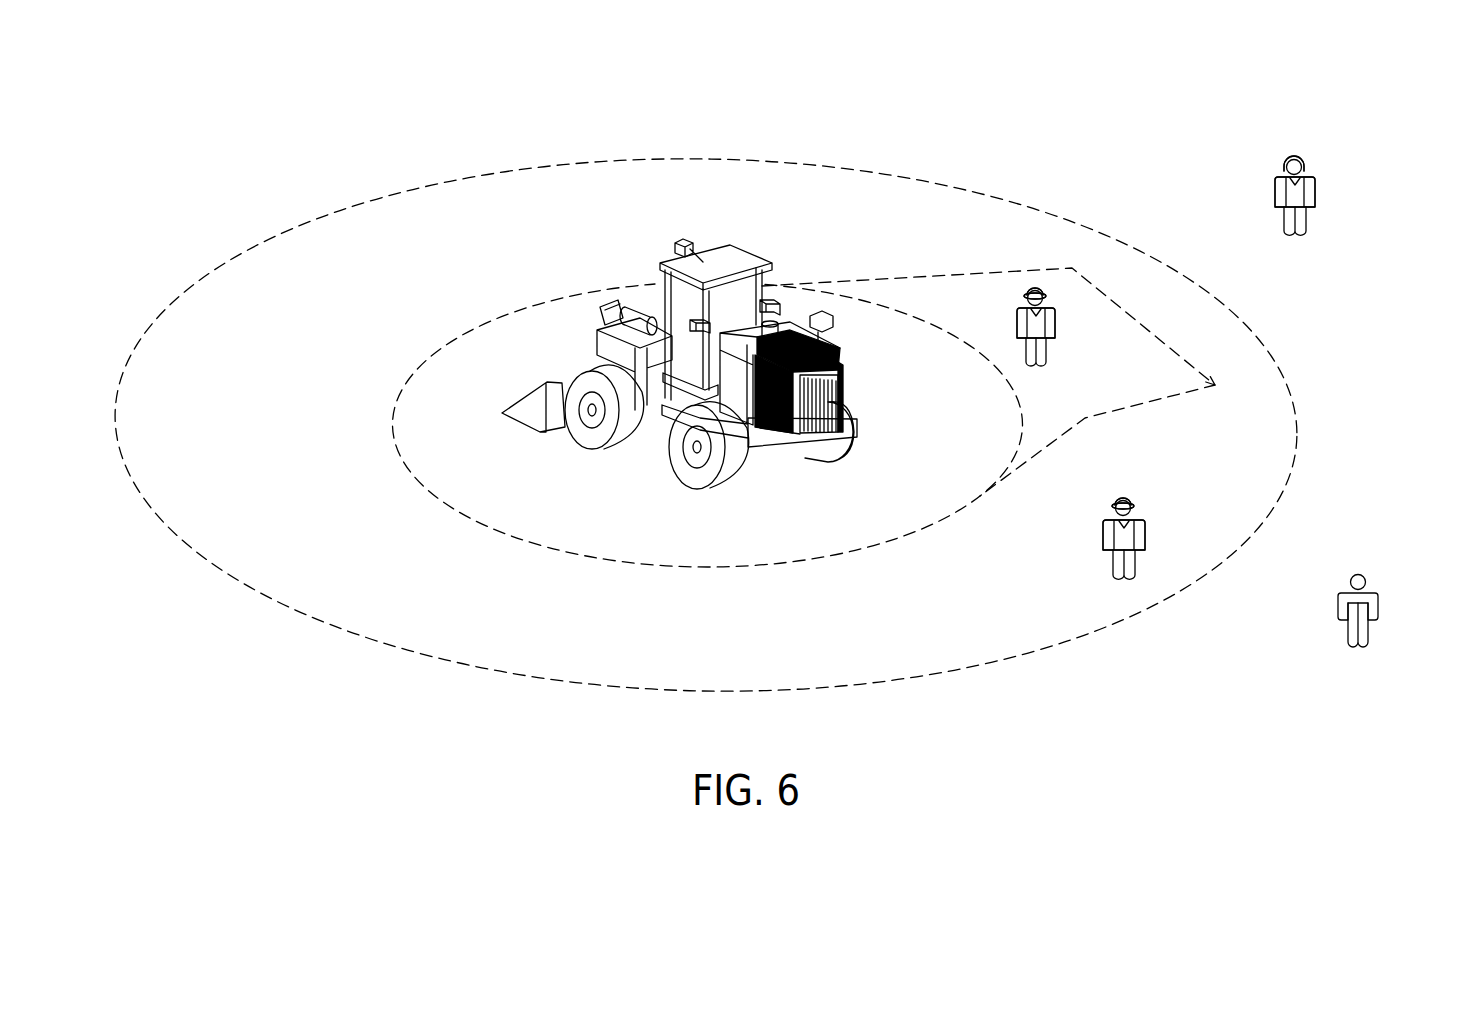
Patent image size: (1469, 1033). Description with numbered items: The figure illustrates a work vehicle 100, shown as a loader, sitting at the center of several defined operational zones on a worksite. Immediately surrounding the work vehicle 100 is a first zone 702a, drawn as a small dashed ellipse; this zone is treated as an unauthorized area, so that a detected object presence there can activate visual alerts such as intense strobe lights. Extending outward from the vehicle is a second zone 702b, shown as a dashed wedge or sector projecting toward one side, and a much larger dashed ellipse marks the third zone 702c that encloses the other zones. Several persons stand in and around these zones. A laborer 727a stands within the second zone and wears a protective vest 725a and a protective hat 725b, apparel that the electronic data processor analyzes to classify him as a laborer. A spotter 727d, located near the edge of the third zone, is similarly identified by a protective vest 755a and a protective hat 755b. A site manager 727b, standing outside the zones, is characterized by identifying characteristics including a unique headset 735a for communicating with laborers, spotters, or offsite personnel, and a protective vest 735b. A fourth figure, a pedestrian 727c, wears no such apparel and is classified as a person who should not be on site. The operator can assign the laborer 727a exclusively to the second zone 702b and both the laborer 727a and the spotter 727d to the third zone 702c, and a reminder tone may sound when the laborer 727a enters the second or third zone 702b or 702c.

The work vehicle 100 is at (648, 470).
The first zone 702a is at (507, 312).
The second zone 702b is at (1148, 319).
The third zone 702c is at (497, 173).
The laborer 727a is at (1018, 280).
The site manager 727b is at (1272, 138).
The pedestrian 727c is at (1362, 550).
The spotter 727d is at (1140, 495).
The protective vest 725a is at (1045, 291).
The protective hat 725b is at (1037, 326).
The headset 735a is at (1283, 160).
The protective vest 735b is at (1287, 196).
The protective vest 755a is at (1114, 500).
The protective hat 755b is at (1103, 528).